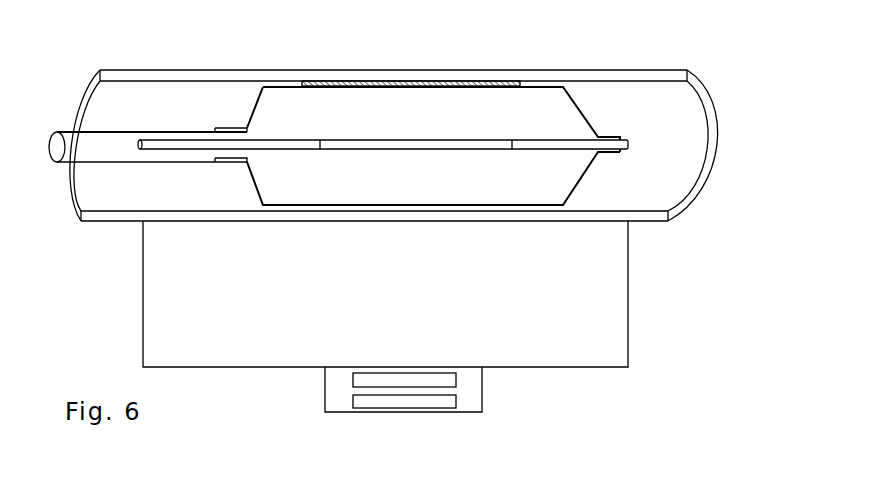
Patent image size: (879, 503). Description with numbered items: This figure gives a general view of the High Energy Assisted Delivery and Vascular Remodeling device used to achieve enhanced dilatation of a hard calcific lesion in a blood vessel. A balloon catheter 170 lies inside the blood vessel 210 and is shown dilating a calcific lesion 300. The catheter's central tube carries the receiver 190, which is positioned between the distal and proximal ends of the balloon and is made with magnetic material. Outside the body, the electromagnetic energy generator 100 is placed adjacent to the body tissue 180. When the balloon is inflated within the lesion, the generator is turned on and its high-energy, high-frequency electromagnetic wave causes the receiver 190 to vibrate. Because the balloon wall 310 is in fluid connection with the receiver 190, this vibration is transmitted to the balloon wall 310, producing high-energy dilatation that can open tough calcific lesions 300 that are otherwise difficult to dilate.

The electromagnetic energy generator 100 is at (345, 377).
The balloon catheter 170 is at (160, 163).
The body tissue 180 is at (547, 338).
The receiver 190 is at (358, 147).
The blood vessel 210 is at (380, 77).
The calcific lesion 300 is at (349, 82).
The balloon wall 310 is at (477, 82).